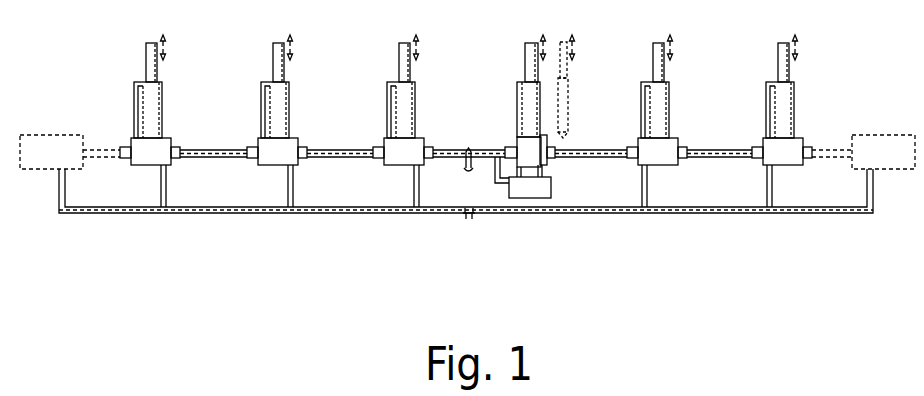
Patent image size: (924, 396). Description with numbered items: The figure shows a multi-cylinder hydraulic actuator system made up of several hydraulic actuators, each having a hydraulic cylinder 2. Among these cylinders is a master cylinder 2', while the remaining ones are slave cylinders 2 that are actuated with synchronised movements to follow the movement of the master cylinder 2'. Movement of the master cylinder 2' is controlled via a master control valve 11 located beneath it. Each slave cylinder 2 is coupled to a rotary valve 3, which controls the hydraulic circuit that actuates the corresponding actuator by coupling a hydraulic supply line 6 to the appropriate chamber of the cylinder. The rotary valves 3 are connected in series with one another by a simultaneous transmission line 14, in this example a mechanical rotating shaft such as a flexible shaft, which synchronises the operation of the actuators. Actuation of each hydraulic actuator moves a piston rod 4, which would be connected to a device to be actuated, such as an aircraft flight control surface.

The hydraulic cylinder 2 is at (464, 95).
The master cylinder 2' is at (507, 106).
The rotary valve 3 is at (390, 168).
The piston rod 4 is at (405, 60).
The hydraulic supply line 6 is at (588, 217).
The master control valve 11 is at (524, 194).
The simultaneous transmission line 14 is at (822, 148).